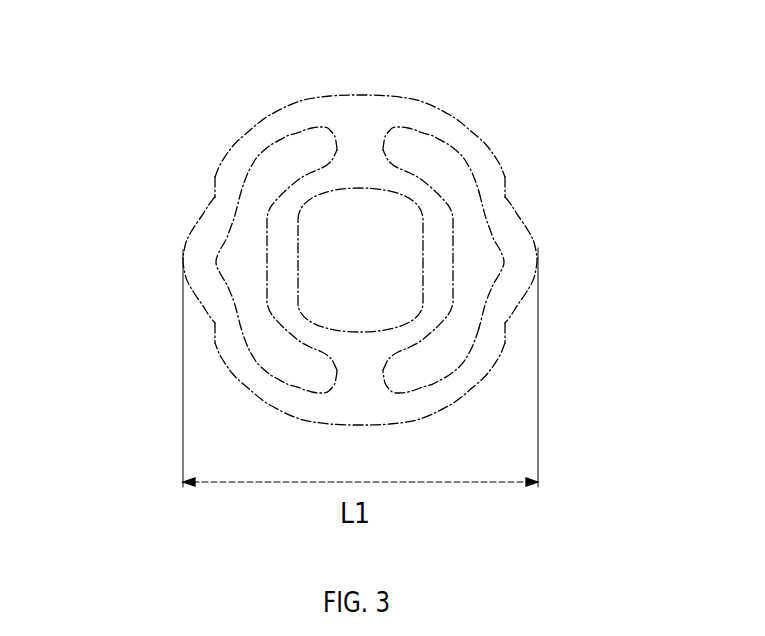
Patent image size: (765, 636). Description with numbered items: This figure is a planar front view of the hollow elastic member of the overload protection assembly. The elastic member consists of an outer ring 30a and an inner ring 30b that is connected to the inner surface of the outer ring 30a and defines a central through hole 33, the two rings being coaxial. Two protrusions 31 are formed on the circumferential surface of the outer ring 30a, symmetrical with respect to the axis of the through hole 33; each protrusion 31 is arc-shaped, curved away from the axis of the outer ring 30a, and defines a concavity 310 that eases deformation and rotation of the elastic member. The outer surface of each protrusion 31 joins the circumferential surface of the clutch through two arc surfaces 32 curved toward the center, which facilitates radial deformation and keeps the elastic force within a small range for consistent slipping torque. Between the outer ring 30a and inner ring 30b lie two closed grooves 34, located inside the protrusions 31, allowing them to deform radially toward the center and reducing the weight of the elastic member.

The outer ring 30a is at (317, 405).
The inner ring 30b is at (302, 195).
The protrusion 31 is at (183, 248).
The arc surface 32 is at (213, 200).
The through hole 33 is at (362, 218).
The closed groove 34 is at (452, 183).
The concavity 310 is at (501, 267).